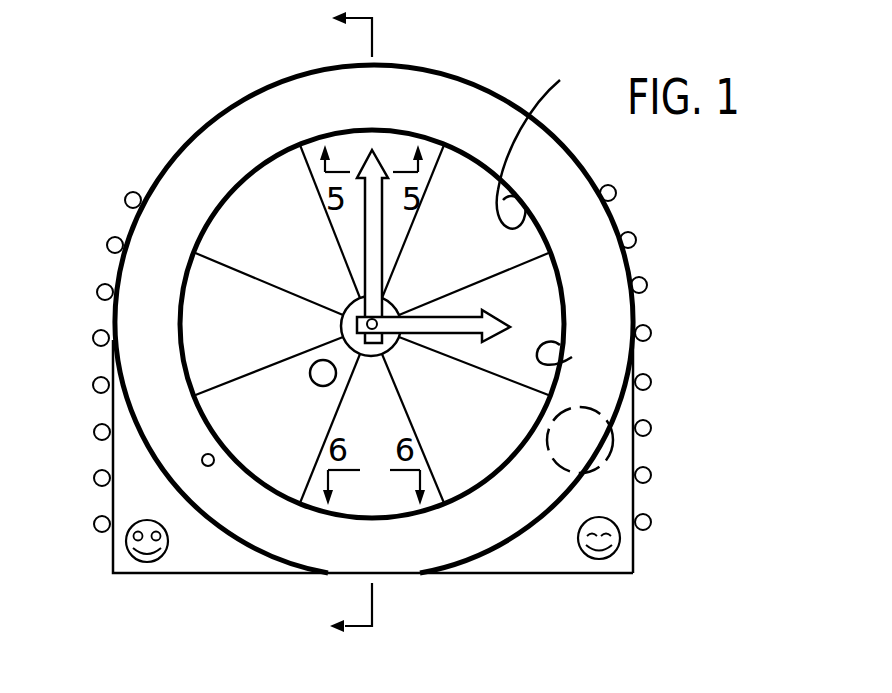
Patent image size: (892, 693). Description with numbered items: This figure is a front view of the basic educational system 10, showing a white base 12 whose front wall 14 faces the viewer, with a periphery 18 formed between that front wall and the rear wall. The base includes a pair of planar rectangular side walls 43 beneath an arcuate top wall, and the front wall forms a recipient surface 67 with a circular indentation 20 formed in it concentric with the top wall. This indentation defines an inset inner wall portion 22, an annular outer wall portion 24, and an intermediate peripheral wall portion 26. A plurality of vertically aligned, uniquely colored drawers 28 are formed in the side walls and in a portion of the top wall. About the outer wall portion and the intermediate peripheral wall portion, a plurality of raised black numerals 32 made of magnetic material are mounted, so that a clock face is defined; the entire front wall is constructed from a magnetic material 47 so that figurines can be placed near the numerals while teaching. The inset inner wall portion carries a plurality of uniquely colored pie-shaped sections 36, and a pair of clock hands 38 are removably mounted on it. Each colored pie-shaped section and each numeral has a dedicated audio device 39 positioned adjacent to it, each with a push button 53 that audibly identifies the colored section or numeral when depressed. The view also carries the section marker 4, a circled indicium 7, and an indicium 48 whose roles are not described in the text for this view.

The section line 4- 4 is at (366, 321).
The highlighted hour indicium 7 is at (613, 450).
The basic educational system 10 is at (528, 62).
The white base 12 is at (622, 560).
The front wall 14 is at (605, 270).
The periphery 18 is at (583, 165).
The circular indentation 20 is at (547, 148).
The inset inner wall portion 22 is at (537, 287).
The annular outer wall portion 24 is at (620, 308).
The intermediate peripheral wall portion 26 is at (572, 357).
The uniquely colored drawers 28 is at (653, 422).
The black numerals 32 is at (398, 90).
The uniquely colored pie-shaped sections 36 is at (247, 222).
The clock hands 38 is at (368, 237).
The audio device 39 is at (313, 363).
The planar rectangular side walls 43 is at (645, 400).
The magnetic material 47 is at (540, 504).
The bezel 48 is at (247, 86).
The push button 53 is at (312, 376).
The recipient surface 67 is at (294, 267).